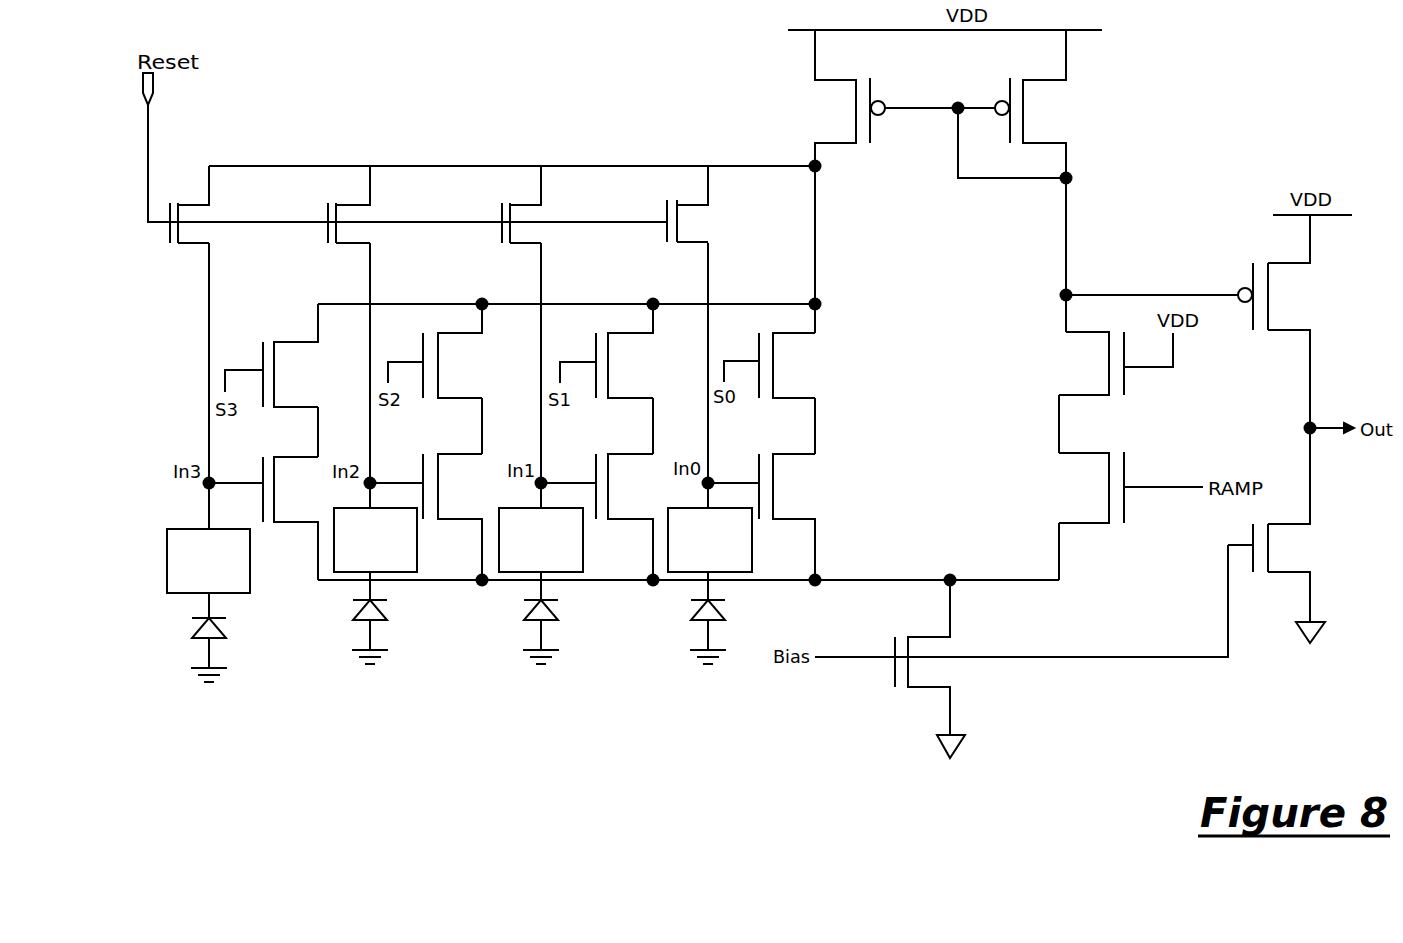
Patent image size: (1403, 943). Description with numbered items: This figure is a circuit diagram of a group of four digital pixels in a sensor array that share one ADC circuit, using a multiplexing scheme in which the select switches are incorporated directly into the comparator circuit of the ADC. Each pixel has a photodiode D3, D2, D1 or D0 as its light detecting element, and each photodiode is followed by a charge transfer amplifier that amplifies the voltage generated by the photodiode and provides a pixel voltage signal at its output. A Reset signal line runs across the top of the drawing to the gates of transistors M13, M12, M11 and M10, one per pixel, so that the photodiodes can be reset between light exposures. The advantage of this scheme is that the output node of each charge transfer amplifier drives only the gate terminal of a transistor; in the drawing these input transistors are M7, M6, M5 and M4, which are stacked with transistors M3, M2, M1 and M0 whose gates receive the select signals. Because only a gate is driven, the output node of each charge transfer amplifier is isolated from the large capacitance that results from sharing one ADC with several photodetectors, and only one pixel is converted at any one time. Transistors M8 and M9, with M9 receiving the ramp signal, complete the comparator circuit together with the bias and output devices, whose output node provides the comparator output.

The reset transistor M13 is at (187, 204).
The reset transistor M12 is at (346, 204).
The reset transistor M11 is at (517, 204).
The reset transistor M10 is at (685, 204).
The select transistor M3 is at (290, 355).
The select transistor M2 is at (452, 351).
The select transistor M1 is at (624, 351).
The select transistor M0 is at (787, 365).
The input transistor M7 is at (290, 518).
The input transistor M6 is at (452, 517).
The input transistor M5 is at (624, 517).
The input transistor M4 is at (787, 517).
The cascode transistor M8 is at (1116, 363).
The ramp transistor M9 is at (1131, 487).
The photodiode D3 is at (224, 633).
The photodiode D2 is at (386, 613).
The photodiode D1 is at (556, 613).
The photodiode D0 is at (723, 613).